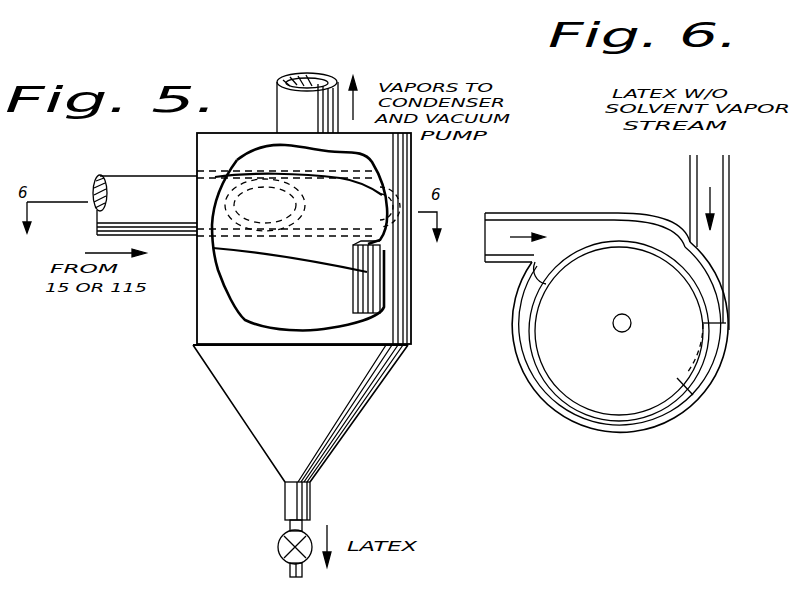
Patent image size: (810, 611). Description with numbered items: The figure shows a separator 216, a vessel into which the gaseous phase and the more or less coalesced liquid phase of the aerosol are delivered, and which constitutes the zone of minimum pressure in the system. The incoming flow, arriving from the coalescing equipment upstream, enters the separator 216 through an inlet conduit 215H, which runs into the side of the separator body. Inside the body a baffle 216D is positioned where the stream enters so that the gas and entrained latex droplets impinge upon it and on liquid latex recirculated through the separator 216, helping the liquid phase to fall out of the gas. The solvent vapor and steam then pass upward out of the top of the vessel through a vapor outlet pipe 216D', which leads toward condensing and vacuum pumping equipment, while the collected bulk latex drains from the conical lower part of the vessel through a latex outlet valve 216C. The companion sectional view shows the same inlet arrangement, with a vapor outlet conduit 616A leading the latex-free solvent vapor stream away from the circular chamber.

In FIG. 5, the separator 216 is at (265, 428).
In FIG. 6, the separator 216 is at (606, 322).
In FIG. 5, the inlet conduit 215H is at (163, 168).
In FIG. 5, the vapor outlet pipe 216D' is at (325, 85).
In FIG. 5, the baffle 216D is at (338, 277).
In FIG. 6, the baffle 216D is at (679, 359).
In FIG. 5, the latex outlet valve 216C is at (285, 509).
In FIG. 6, the vapor outlet conduit 616A is at (690, 188).